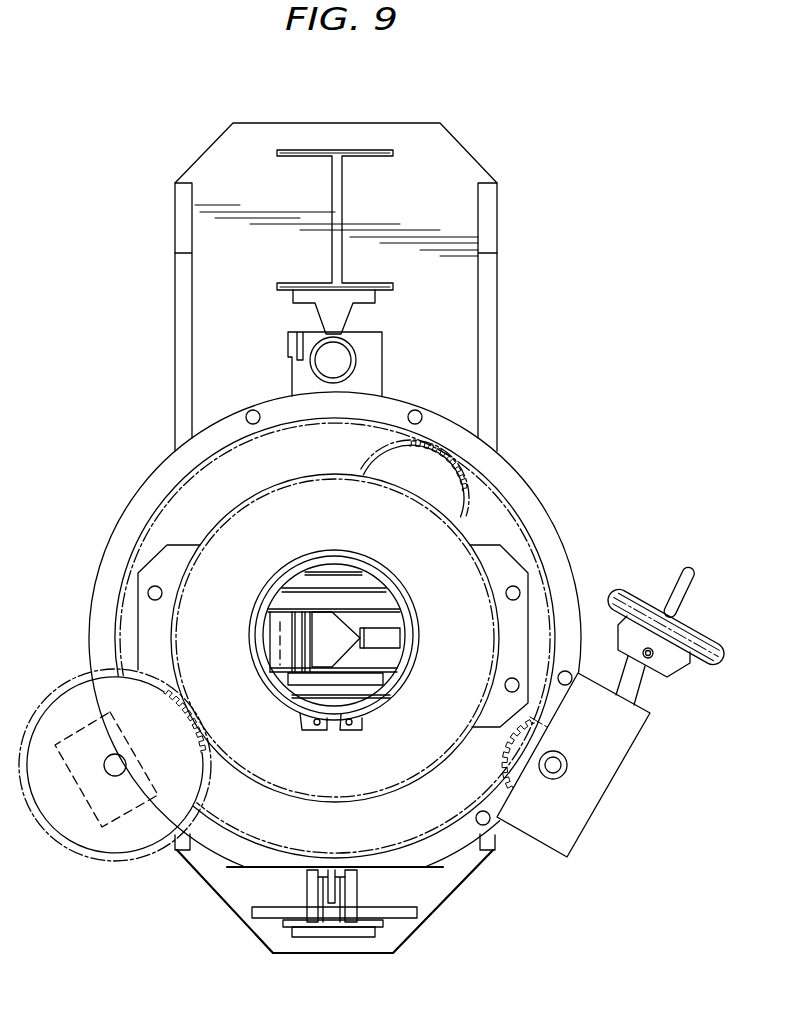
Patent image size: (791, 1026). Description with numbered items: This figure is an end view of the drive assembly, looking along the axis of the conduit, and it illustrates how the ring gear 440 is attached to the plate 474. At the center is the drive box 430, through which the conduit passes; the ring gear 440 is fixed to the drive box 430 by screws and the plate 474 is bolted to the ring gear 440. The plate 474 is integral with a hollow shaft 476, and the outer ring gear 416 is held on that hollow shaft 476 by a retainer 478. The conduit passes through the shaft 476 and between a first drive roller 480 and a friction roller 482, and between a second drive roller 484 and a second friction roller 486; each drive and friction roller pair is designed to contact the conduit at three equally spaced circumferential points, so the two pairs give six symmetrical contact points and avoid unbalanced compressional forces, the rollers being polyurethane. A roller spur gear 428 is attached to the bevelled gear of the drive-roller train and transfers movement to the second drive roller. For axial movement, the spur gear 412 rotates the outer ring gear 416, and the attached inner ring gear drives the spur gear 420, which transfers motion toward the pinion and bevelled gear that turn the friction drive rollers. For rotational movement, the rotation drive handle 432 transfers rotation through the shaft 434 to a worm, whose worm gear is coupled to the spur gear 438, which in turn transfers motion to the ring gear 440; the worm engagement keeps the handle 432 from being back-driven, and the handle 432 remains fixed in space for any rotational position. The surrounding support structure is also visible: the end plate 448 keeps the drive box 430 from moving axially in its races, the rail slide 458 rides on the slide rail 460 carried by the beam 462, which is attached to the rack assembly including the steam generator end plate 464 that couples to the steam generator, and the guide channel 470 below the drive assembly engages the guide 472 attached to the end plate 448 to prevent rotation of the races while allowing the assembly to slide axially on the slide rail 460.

The spur gear 412 is at (55, 688).
The outer ring gear 416 is at (313, 797).
The spur gear 420 is at (460, 502).
The roller spur gear 428 is at (377, 602).
The drive box 430 is at (317, 585).
The rotation drive handle 432 is at (697, 647).
The shaft 434 is at (638, 697).
The spur gear 438 is at (508, 800).
The ring gear 440 is at (182, 483).
The end plate 448 is at (168, 445).
The rail slide 458 is at (382, 357).
The slide rail 460 is at (347, 310).
The beam 462 is at (370, 150).
The steam generator end plate 464 is at (465, 148).
The guide channel 470 is at (397, 913).
The guide 472 is at (335, 893).
The plate 474 is at (180, 545).
The hollow shaft 476 is at (403, 677).
The retainer 478 is at (390, 703).
The first drive roller 480 is at (393, 623).
The friction roller 482 is at (257, 650).
The second drive roller 484 is at (307, 662).
The second friction roller 486 is at (358, 638).